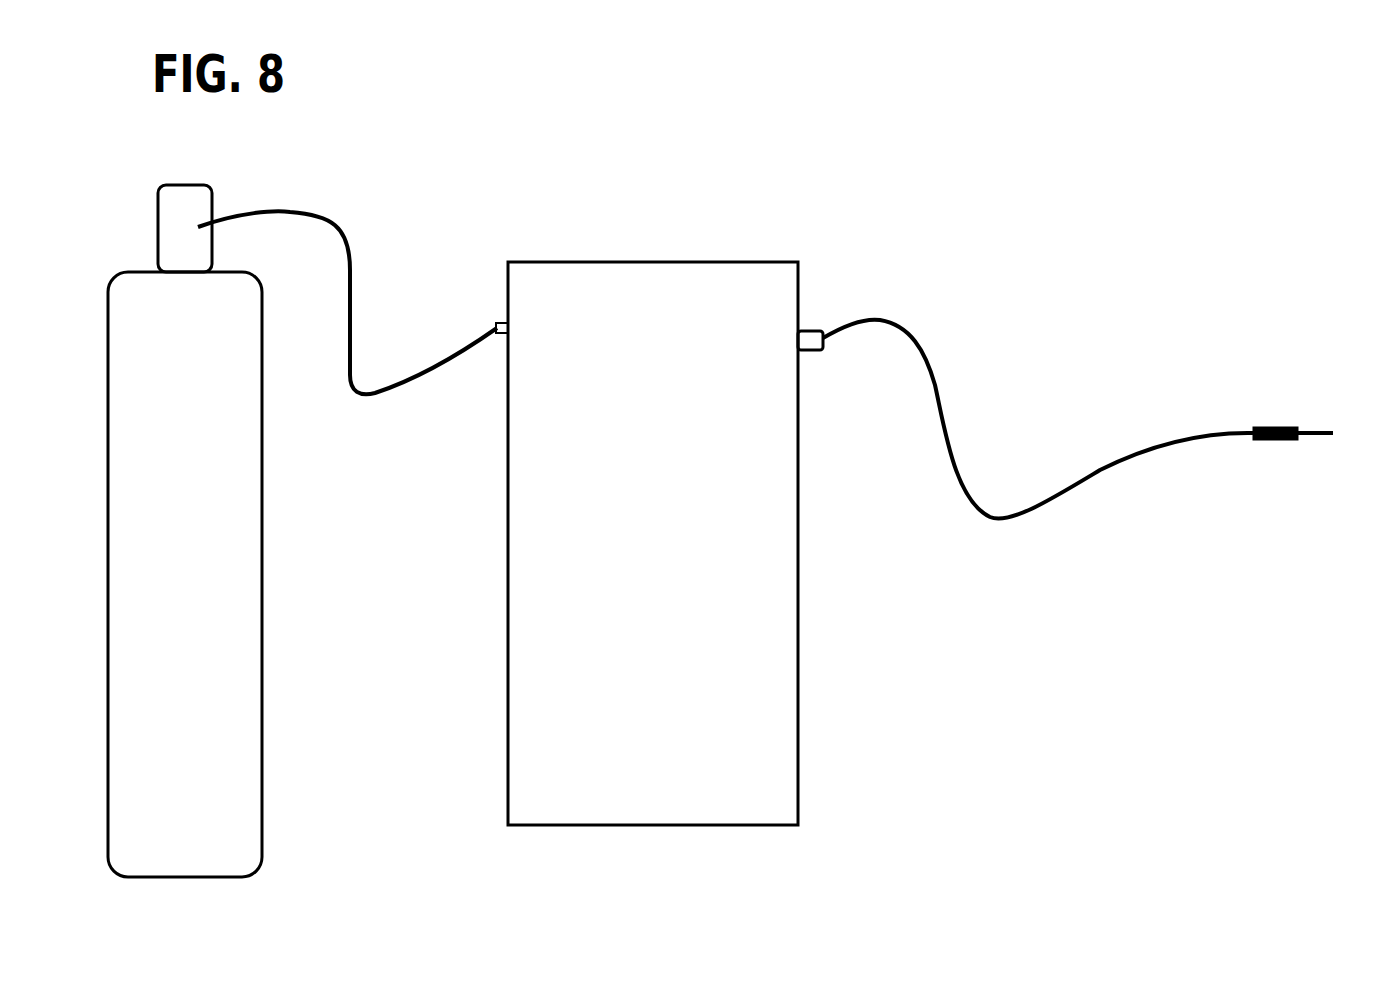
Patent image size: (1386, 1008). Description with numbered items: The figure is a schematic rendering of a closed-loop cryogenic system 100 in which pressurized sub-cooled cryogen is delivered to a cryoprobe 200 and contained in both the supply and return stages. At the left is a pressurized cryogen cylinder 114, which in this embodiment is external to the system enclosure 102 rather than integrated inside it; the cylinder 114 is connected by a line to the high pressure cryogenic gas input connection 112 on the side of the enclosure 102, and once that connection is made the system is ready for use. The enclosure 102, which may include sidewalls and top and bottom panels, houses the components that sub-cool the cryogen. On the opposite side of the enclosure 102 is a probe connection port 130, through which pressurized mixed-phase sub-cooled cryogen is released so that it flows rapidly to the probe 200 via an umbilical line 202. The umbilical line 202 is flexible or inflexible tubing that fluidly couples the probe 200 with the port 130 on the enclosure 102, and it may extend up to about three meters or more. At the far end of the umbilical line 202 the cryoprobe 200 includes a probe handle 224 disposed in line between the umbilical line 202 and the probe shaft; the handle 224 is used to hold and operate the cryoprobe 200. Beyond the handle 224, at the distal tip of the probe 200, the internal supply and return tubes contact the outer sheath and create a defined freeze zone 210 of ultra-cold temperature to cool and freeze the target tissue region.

The cryogenic system 100 is at (950, 103).
The pressurized cryogen cylinder 114 is at (205, 697).
The system enclosure 102 is at (673, 663).
The high pressure cryogenic gas input connection 112 is at (508, 323).
The probe connection port 130 is at (813, 328).
The cryoprobe 200 is at (1093, 494).
The umbilical line 202 is at (998, 518).
The probe handle 224 is at (1268, 427).
The freeze zone 210 is at (1332, 437).